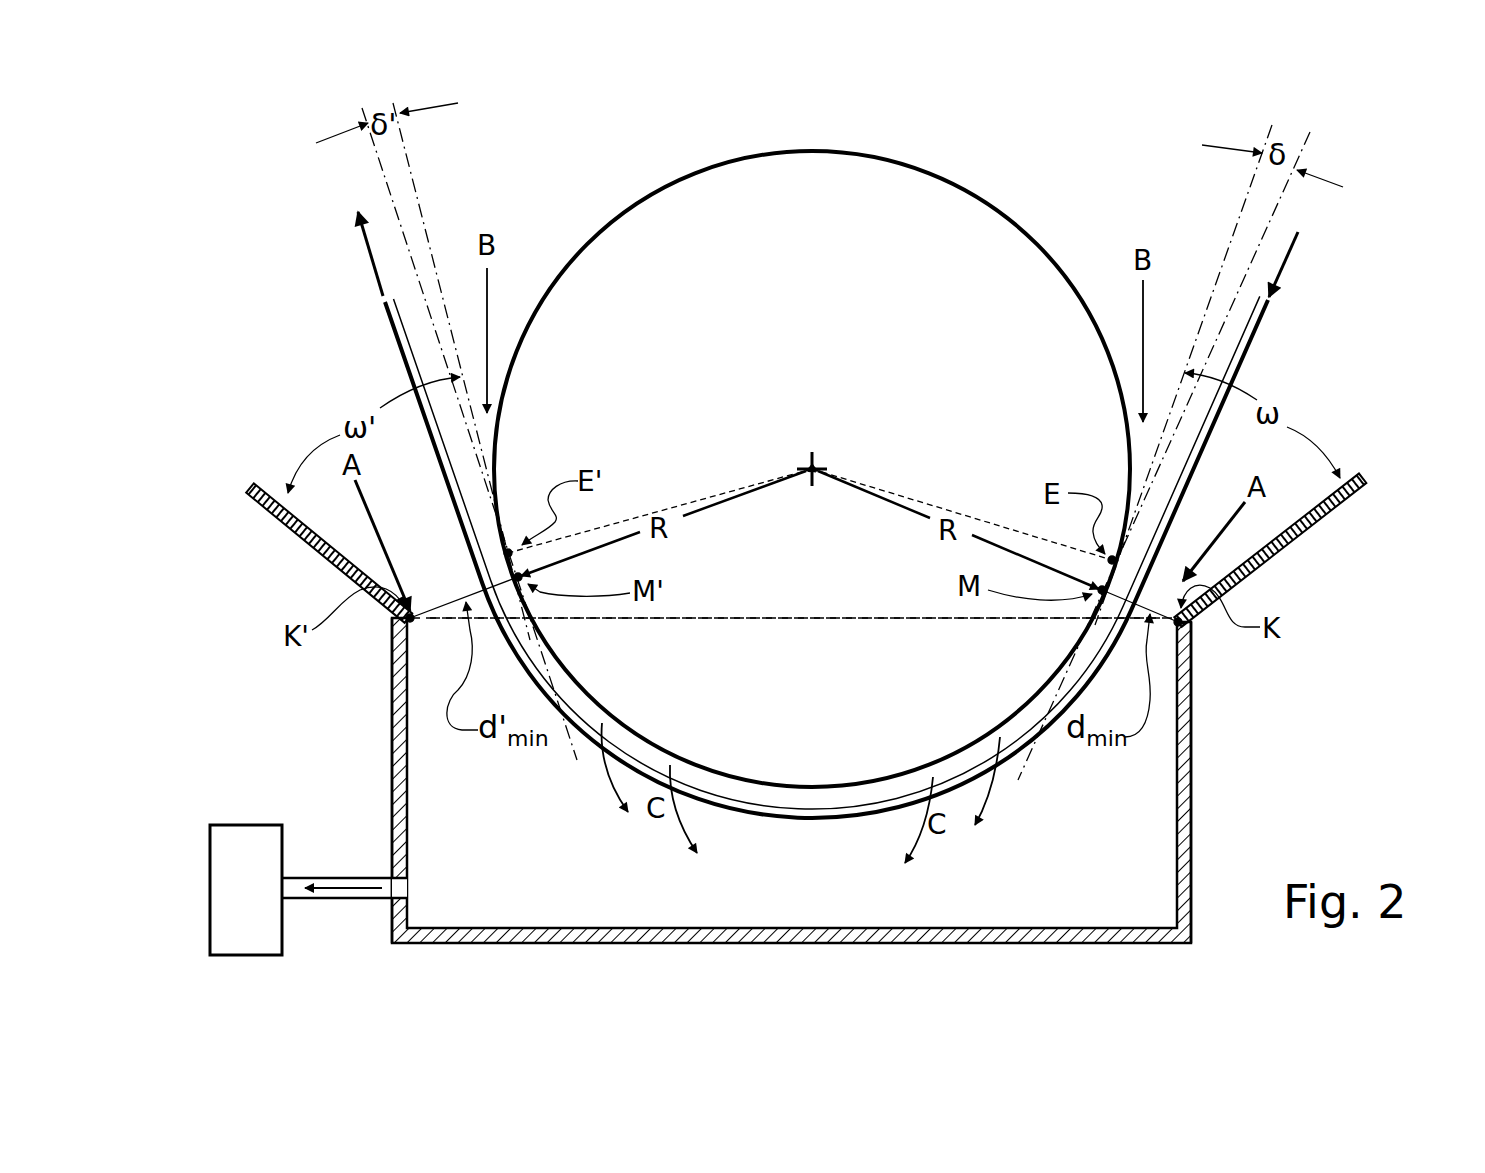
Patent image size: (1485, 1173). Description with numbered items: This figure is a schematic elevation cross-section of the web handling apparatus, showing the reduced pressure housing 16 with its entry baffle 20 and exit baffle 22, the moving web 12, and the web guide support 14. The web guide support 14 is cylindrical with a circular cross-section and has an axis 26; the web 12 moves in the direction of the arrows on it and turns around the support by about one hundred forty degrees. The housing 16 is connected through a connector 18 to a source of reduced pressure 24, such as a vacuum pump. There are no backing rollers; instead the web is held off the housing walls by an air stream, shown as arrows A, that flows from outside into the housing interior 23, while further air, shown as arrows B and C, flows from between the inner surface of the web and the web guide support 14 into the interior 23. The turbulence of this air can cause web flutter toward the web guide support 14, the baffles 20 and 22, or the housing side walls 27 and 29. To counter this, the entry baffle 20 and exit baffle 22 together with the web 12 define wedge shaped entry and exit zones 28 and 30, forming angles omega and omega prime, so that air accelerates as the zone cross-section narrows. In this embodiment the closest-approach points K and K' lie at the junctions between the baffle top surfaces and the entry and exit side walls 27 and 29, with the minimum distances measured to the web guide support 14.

The moving web 12 is at (1252, 337).
The web guide support 14 is at (957, 186).
The reduced pressure housing 16 is at (1192, 832).
The connector 18 is at (362, 900).
The entry baffle 20 is at (1305, 530).
The exit baffle 22 is at (290, 516).
The housing interior 23 is at (1005, 901).
The source of reduced pressure 24 is at (245, 848).
The axis 26 is at (818, 464).
The entry side wall 27 is at (1192, 735).
The entry zone 28 is at (1356, 356).
The exit side wall 29 is at (392, 762).
The exit zone 30 is at (333, 392).